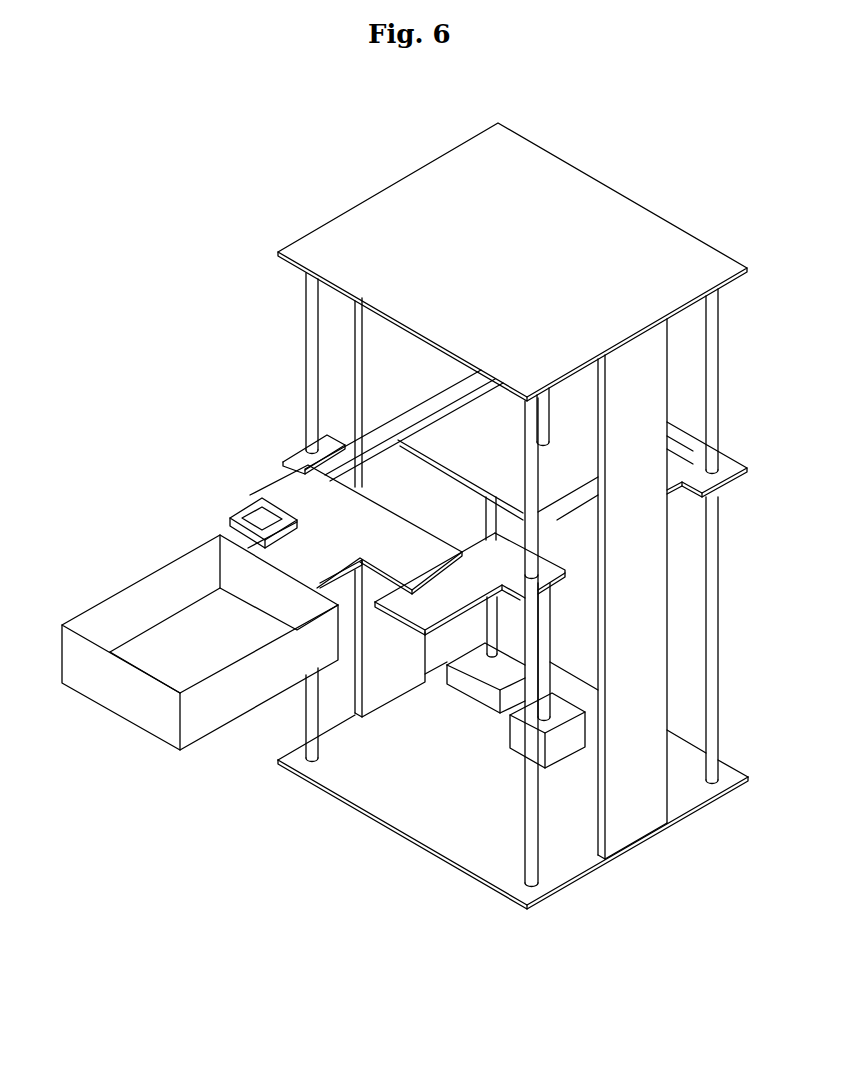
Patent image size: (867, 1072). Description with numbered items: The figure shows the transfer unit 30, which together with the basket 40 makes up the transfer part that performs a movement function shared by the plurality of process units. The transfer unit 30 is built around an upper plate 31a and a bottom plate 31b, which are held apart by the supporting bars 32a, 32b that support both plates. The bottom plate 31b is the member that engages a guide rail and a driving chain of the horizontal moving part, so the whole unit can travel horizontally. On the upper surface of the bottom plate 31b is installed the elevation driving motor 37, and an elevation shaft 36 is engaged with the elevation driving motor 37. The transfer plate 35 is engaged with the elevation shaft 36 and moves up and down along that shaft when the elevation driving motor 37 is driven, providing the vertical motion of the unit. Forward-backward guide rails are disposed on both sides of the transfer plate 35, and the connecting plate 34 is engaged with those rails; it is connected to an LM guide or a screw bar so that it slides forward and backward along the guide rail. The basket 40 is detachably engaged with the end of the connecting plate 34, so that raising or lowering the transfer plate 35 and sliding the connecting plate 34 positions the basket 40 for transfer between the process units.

The transfer unit 30 is at (654, 184).
The upper plate 31a is at (372, 222).
The bottom plate 31b is at (442, 838).
The supporting bar 32a is at (315, 340).
The supporting bar 32b is at (640, 798).
The connecting plate 34 is at (295, 498).
The transfer plate 35 is at (440, 428).
The elevation shaft 36 is at (545, 645).
The elevation driving motor 37 is at (558, 755).
The basket 40 is at (143, 712).